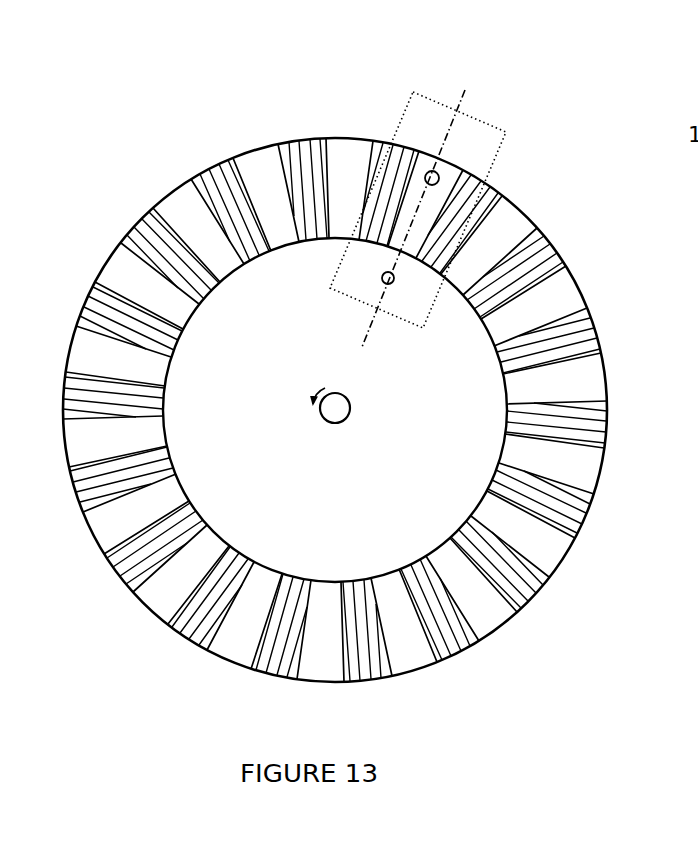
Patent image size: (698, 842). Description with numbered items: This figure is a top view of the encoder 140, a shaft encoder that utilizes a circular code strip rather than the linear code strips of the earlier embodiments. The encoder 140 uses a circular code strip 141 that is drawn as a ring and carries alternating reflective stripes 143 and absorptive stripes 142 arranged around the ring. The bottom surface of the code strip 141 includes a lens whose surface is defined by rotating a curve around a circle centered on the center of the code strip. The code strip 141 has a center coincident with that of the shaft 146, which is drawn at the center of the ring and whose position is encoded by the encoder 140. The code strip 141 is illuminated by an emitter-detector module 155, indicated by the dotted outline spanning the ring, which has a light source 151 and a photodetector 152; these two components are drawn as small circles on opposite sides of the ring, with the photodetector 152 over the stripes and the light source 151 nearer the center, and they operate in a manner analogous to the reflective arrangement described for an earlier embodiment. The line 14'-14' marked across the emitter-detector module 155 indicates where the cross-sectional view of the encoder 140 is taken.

The encoder 140 is at (165, 108).
The circular code strip 141 is at (513, 617).
The absorptive stripes 142 is at (552, 548).
The reflective stripes 143 is at (593, 418).
The shaft 146 is at (350, 403).
The light source 151 is at (394, 278).
The photodetector 152 is at (433, 171).
The emitter-detector module 155 is at (500, 157).
The line 14'- 14' is at (384, 201).